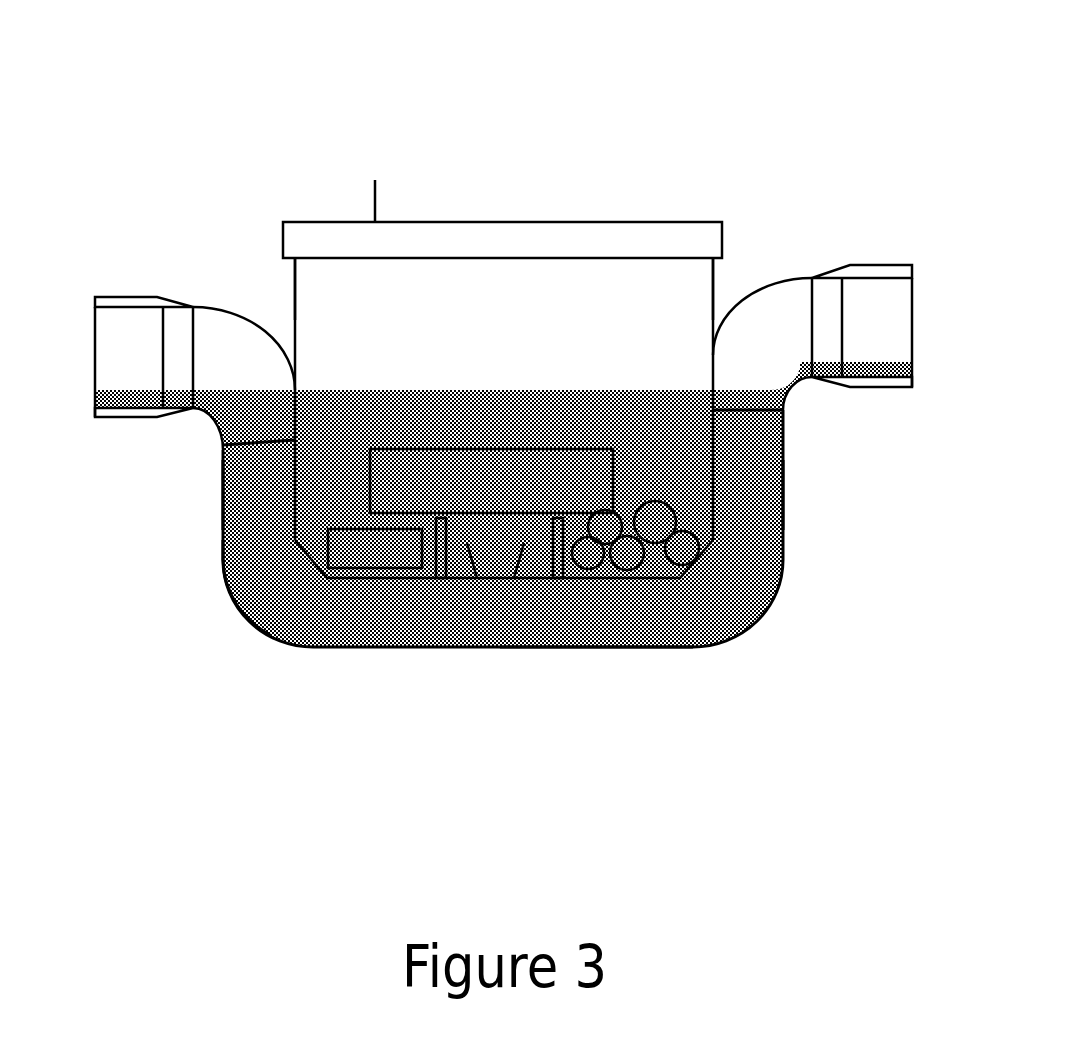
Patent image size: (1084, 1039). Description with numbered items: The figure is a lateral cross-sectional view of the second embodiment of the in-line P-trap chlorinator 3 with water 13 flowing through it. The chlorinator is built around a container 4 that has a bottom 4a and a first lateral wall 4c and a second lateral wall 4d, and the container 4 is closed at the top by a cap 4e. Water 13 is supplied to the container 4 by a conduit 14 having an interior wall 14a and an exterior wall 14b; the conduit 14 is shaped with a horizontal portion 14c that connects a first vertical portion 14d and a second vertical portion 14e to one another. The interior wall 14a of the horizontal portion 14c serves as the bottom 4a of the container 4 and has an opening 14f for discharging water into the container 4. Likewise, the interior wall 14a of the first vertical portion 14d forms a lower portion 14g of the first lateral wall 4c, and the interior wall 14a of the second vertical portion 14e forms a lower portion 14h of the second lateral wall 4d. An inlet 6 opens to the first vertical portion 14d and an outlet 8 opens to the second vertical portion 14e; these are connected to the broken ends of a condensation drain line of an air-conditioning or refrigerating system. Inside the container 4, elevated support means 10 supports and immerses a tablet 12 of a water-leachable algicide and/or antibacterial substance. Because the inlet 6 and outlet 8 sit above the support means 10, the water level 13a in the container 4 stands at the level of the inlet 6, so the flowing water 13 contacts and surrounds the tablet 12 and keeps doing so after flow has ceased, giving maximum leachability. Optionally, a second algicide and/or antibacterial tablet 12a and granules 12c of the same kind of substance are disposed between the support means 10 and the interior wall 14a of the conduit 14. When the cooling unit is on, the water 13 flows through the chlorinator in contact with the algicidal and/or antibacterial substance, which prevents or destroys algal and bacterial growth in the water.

The in-line P-trap chlorinator 3 is at (488, 218).
The container 4 is at (613, 210).
The bottom 4a is at (640, 578).
The first lateral wall 4c is at (713, 290).
The second lateral wall 4d is at (293, 307).
The cap 4e is at (374, 185).
The inlet 6 is at (882, 265).
The outlet 8 is at (133, 297).
The elevated support means 10 is at (443, 545).
The tablet 12 is at (443, 449).
The second algicide and/or antibacterial tablet 12a is at (353, 568).
The granules 12c is at (673, 522).
The water 13 is at (337, 487).
The water level 13a is at (520, 388).
The conduit 14 is at (803, 445).
The interior wall 14a is at (293, 440).
The exterior wall 14b is at (223, 493).
The horizontal portion 14c is at (605, 660).
The first vertical portion 14d is at (788, 490).
The second vertical portion 14e is at (217, 568).
The opening 14f is at (498, 552).
The lower portion of the first lateral wall 14g is at (712, 382).
The lower portion of the second lateral wall 14h is at (296, 365).